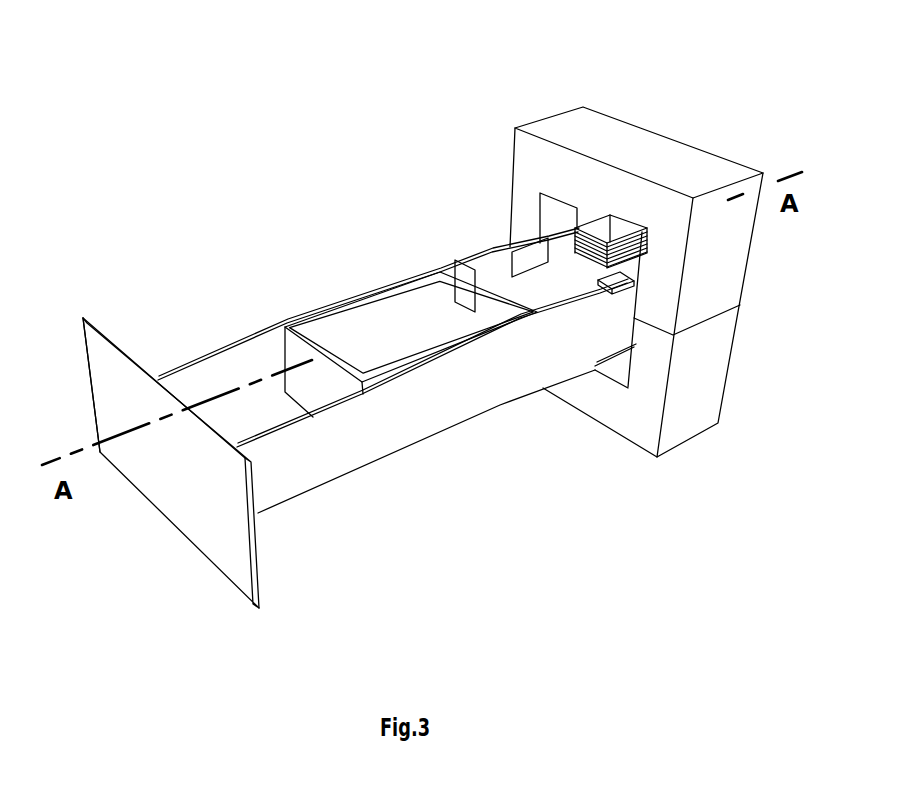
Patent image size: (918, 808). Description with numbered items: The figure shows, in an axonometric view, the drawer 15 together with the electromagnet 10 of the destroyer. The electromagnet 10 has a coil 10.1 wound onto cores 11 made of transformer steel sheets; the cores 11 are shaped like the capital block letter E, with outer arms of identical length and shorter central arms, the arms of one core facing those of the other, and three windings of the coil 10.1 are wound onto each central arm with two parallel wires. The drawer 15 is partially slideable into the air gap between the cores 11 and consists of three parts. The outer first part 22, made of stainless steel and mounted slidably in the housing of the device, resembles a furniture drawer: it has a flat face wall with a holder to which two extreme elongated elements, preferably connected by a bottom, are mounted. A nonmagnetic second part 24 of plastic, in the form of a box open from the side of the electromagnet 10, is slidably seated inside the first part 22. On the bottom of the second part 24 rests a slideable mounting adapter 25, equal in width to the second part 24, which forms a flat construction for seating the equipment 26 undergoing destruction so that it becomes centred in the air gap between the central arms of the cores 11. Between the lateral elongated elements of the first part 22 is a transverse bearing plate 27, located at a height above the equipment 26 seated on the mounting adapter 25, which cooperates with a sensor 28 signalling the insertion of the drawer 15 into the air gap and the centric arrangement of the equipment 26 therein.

The electromagnet 10 is at (677, 93).
The coil 10.1 is at (632, 233).
The cores 11 is at (537, 167).
The drawer 15 is at (212, 523).
The first part 22 is at (285, 413).
The second part 24 is at (358, 325).
The mounting adapter 25 is at (618, 282).
The equipment undergoing destruction 26 is at (468, 538).
The transverse bearing plate 27 is at (467, 280).
The sensor 28 is at (513, 278).